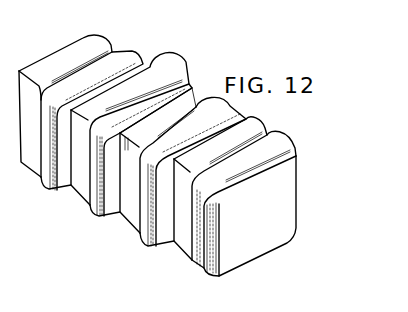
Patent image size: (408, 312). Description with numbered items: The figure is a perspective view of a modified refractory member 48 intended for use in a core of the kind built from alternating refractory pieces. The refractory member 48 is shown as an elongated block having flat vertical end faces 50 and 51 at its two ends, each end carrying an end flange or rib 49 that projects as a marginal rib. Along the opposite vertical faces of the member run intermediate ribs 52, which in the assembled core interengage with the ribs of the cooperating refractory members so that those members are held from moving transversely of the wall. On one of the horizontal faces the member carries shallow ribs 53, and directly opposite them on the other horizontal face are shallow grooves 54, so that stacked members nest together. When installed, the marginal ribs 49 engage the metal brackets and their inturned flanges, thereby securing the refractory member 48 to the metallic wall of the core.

The refractory member 48 is at (196, 68).
The end flange or rib 49 is at (285, 138).
The flat vertical end face 50 is at (269, 233).
The flat vertical end face 51 is at (50, 53).
The intermediate rib 52 is at (43, 173).
The shallow rib 53 is at (90, 50).
The shallow groove 54 is at (80, 182).